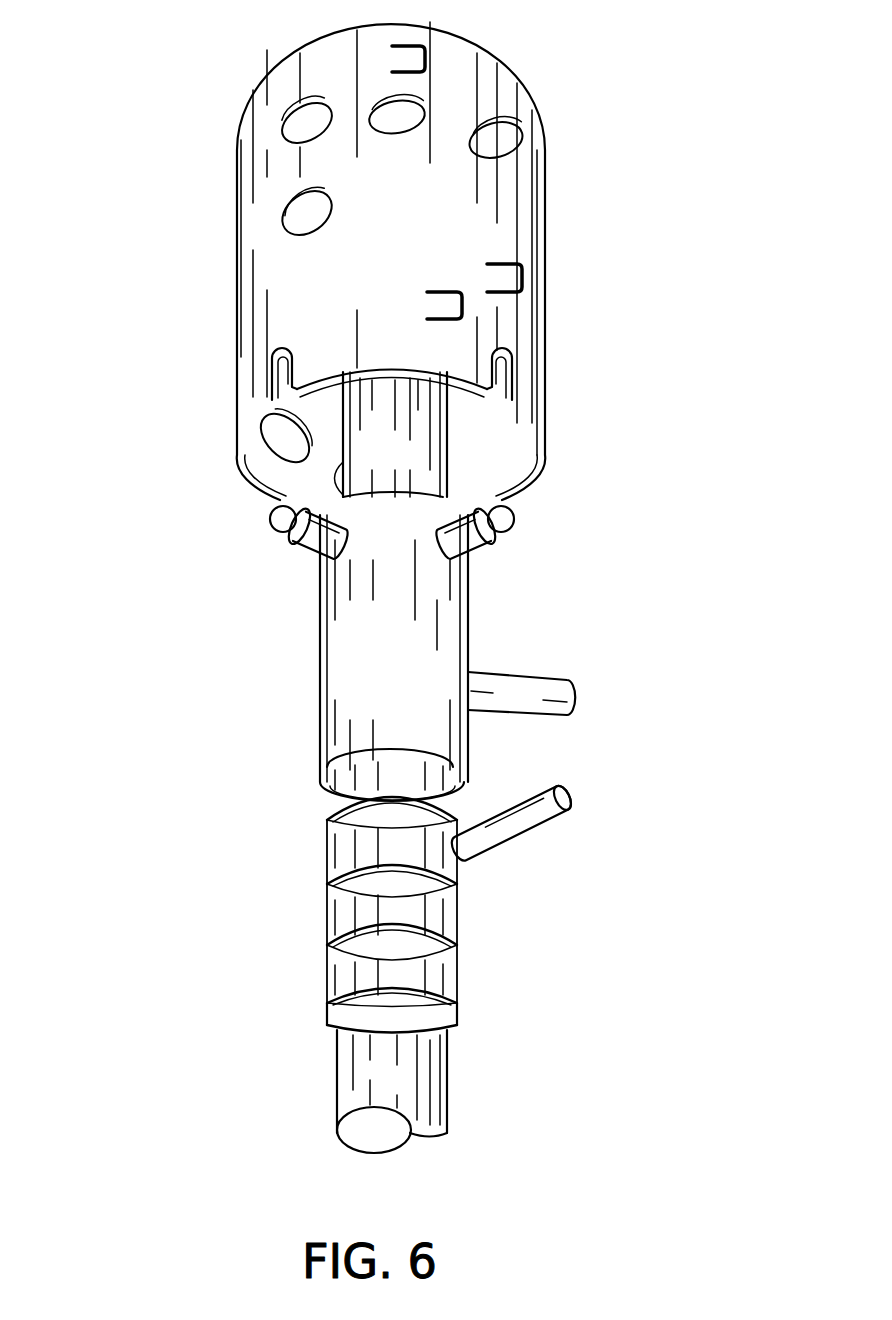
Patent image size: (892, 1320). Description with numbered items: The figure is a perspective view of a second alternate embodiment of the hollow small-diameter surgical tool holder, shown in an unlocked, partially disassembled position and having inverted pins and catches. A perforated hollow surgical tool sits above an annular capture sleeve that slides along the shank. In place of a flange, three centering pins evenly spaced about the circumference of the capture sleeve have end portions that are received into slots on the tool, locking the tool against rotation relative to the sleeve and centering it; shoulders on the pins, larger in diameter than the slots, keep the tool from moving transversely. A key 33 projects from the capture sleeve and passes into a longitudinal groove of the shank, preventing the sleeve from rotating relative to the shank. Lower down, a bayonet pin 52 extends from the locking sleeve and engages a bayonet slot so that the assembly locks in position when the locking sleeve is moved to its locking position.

The key 33 is at (555, 688).
The bayonet pin 52 is at (562, 795).